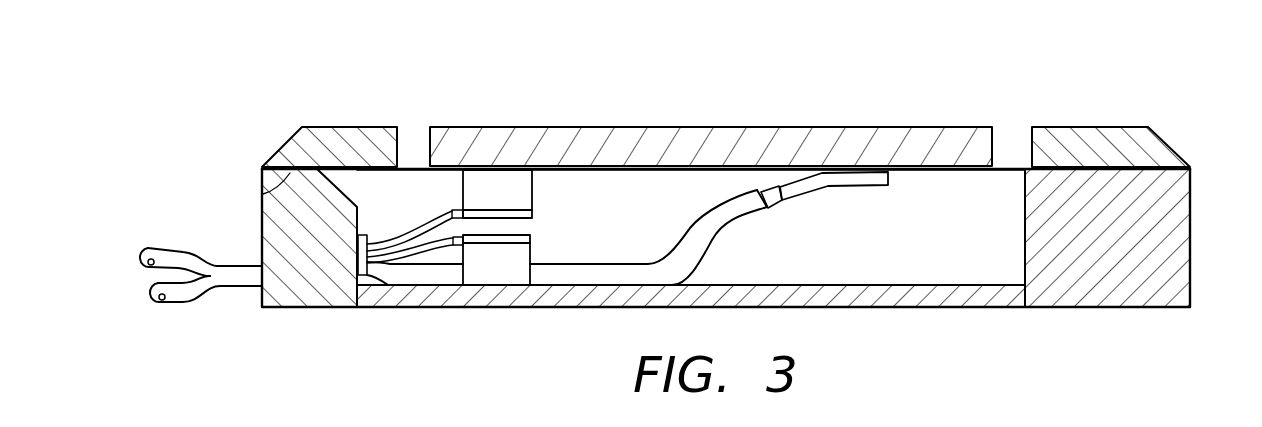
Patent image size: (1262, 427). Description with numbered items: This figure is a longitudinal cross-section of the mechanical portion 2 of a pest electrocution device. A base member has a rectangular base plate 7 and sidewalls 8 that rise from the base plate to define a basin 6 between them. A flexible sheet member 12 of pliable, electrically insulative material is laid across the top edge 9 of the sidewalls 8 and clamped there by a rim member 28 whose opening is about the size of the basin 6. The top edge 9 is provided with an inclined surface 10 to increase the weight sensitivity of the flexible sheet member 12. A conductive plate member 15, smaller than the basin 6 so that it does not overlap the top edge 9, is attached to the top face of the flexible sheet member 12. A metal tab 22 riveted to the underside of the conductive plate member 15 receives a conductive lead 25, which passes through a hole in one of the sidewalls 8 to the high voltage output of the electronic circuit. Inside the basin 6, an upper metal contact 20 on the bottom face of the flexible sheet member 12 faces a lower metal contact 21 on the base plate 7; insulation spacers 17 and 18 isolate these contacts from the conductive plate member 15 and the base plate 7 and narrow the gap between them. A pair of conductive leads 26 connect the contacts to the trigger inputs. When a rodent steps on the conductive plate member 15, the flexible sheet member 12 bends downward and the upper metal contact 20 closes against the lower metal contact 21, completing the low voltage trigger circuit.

The mechanical portion 2 is at (681, 81).
The basin 6 is at (983, 272).
The base plate 7 is at (933, 293).
The sidewalls 8 is at (1193, 217).
The top edge 9 is at (262, 194).
The inclined surface 10 is at (357, 202).
The flexible sheet member 12 is at (1010, 165).
The conductive plate member 15 is at (553, 126).
The insulation spacer 17 is at (532, 177).
The insulation spacer 18 is at (532, 258).
The upper metal contact 20 is at (532, 213).
The lower metal contact 21 is at (532, 239).
The metal tab 22 is at (870, 188).
The conductive lead 25 is at (162, 247).
The conductive leads 26 is at (172, 302).
The rim member 28 is at (292, 150).